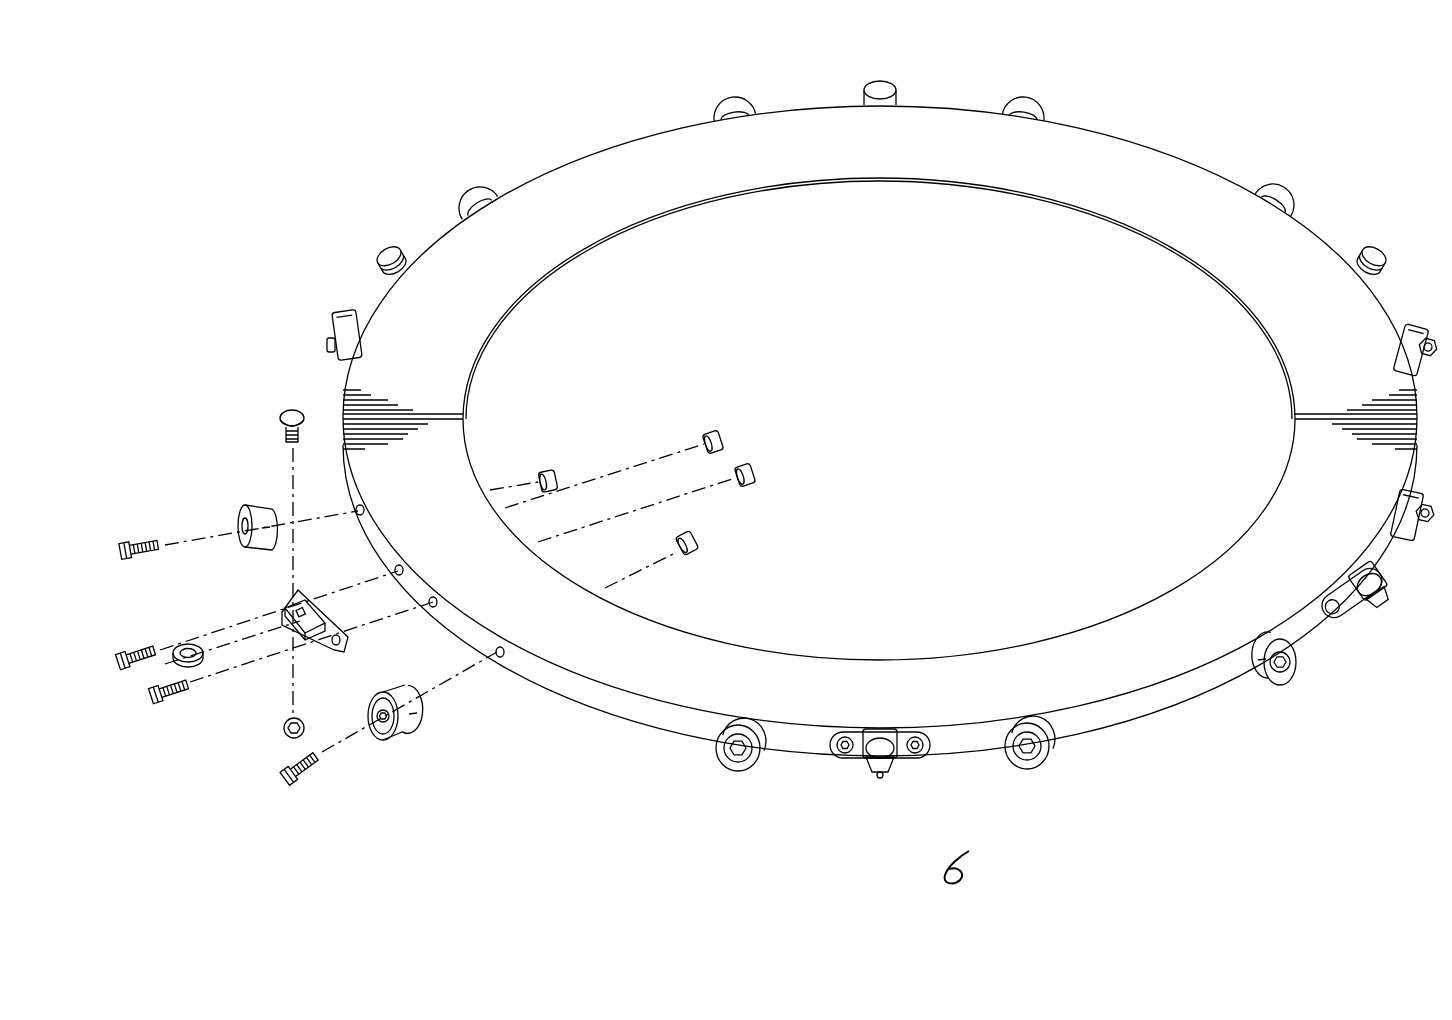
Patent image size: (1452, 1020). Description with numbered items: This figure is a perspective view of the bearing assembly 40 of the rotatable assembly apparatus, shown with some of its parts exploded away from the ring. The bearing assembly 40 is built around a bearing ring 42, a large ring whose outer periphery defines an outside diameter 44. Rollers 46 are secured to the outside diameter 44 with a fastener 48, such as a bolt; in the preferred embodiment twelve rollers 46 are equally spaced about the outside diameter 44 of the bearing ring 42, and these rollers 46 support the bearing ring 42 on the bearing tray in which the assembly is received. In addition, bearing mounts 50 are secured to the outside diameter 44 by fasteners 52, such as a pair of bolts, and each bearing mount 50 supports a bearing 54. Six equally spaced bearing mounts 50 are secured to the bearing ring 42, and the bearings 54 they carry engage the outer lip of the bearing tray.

The bearing assembly 40 is at (388, 85).
The bearing ring 42 is at (1097, 138).
The outside diameter 44 is at (1160, 153).
The roller 46 is at (1403, 327).
The fastener 48 is at (312, 778).
The bearing mount 50 is at (297, 606).
The fastener 52 is at (1372, 612).
The bearing 54 is at (185, 642).